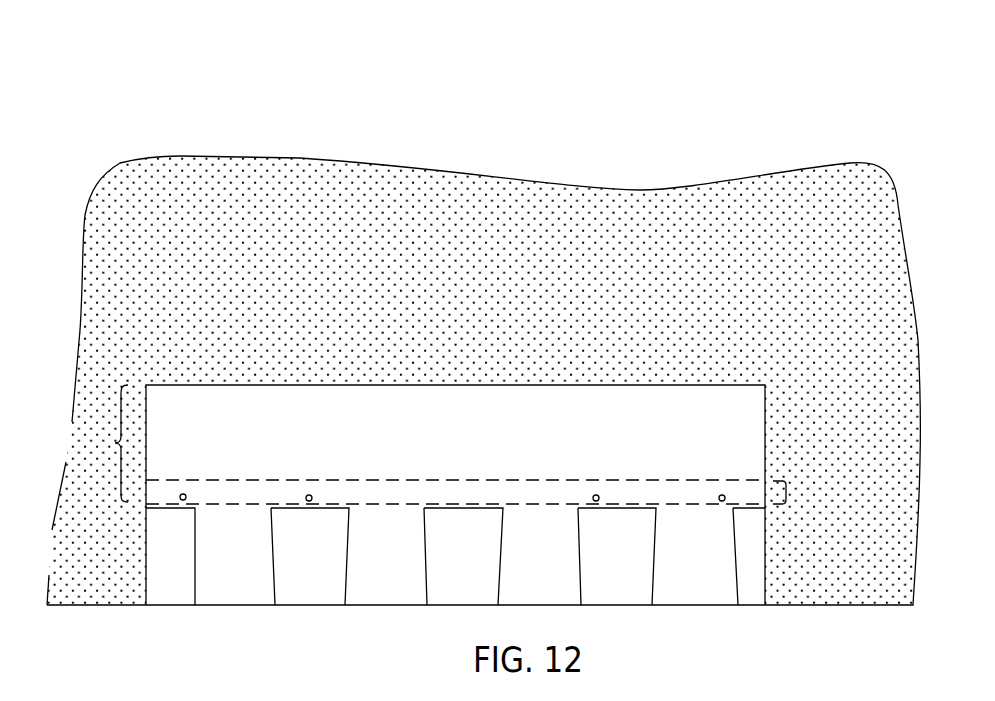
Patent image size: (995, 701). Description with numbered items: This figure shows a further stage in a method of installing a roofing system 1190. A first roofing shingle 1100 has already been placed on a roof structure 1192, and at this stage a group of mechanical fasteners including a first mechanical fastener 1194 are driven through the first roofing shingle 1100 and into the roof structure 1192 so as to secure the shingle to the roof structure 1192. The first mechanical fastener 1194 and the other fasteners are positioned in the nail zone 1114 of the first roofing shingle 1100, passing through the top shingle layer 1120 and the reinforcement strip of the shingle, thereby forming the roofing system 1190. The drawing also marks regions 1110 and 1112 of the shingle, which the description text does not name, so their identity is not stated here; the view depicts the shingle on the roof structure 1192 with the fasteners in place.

The roofing system 1190 is at (120, 153).
The roof structure 1192 is at (528, 210).
The first roofing shingle 1100 is at (125, 371).
The upper layer 1110 is at (115, 443).
The lower layer with fins 1112 is at (128, 508).
The top shingle layer 1120 is at (487, 447).
The first mechanical fastener 1194 is at (183, 494).
The nail zone 1114 is at (787, 492).